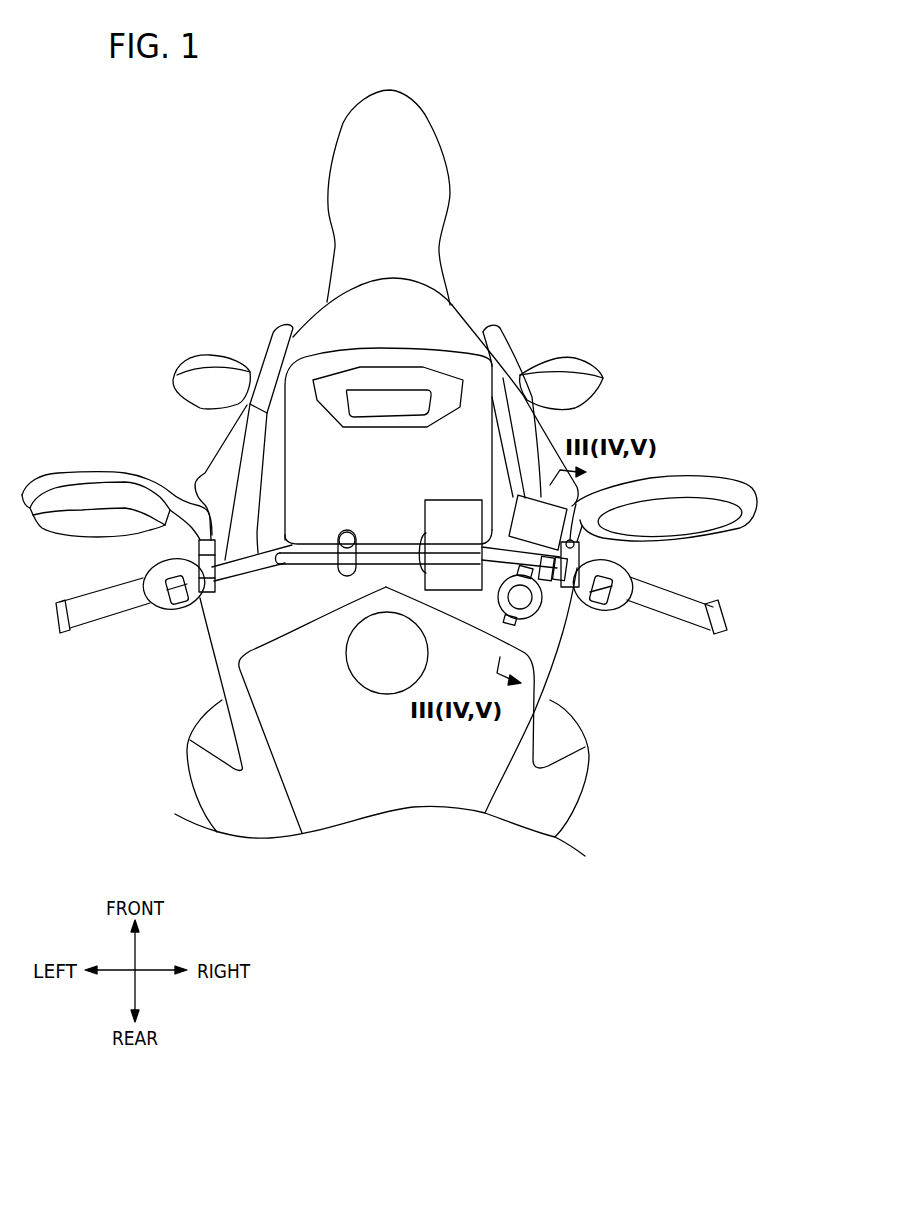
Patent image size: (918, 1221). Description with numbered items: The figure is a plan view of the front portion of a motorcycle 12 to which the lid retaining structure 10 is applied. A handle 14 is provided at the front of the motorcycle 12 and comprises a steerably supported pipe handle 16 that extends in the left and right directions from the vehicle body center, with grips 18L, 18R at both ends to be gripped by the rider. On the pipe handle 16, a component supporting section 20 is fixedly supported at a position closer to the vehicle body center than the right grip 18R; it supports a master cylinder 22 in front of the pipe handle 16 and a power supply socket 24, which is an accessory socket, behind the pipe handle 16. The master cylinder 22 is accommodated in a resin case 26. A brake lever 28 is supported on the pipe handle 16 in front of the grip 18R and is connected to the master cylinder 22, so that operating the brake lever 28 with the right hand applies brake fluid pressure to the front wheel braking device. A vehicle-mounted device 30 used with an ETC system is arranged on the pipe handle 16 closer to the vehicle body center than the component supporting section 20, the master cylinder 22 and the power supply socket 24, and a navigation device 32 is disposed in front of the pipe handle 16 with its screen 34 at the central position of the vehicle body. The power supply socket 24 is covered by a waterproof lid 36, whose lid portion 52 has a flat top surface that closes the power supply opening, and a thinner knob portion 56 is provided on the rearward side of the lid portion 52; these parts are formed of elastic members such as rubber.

The lid retaining structure 10 is at (570, 572).
The motorcycle 12 is at (468, 145).
The handle 14 is at (715, 640).
The pipe handle 16 is at (242, 565).
The left grip 18L is at (95, 608).
The right grip 18R is at (683, 607).
The component supporting section 20 is at (538, 583).
The master cylinder 22 is at (523, 520).
The power supply socket 24 is at (532, 615).
The resin case 26 is at (472, 503).
The brake lever 28 is at (672, 545).
The vehicle-mounted device 30 is at (438, 520).
The navigation device 32 is at (416, 377).
The screen 34 is at (376, 402).
The lid 36 is at (617, 614).
The lid portion 52 is at (538, 597).
The knob portion 56 is at (512, 622).